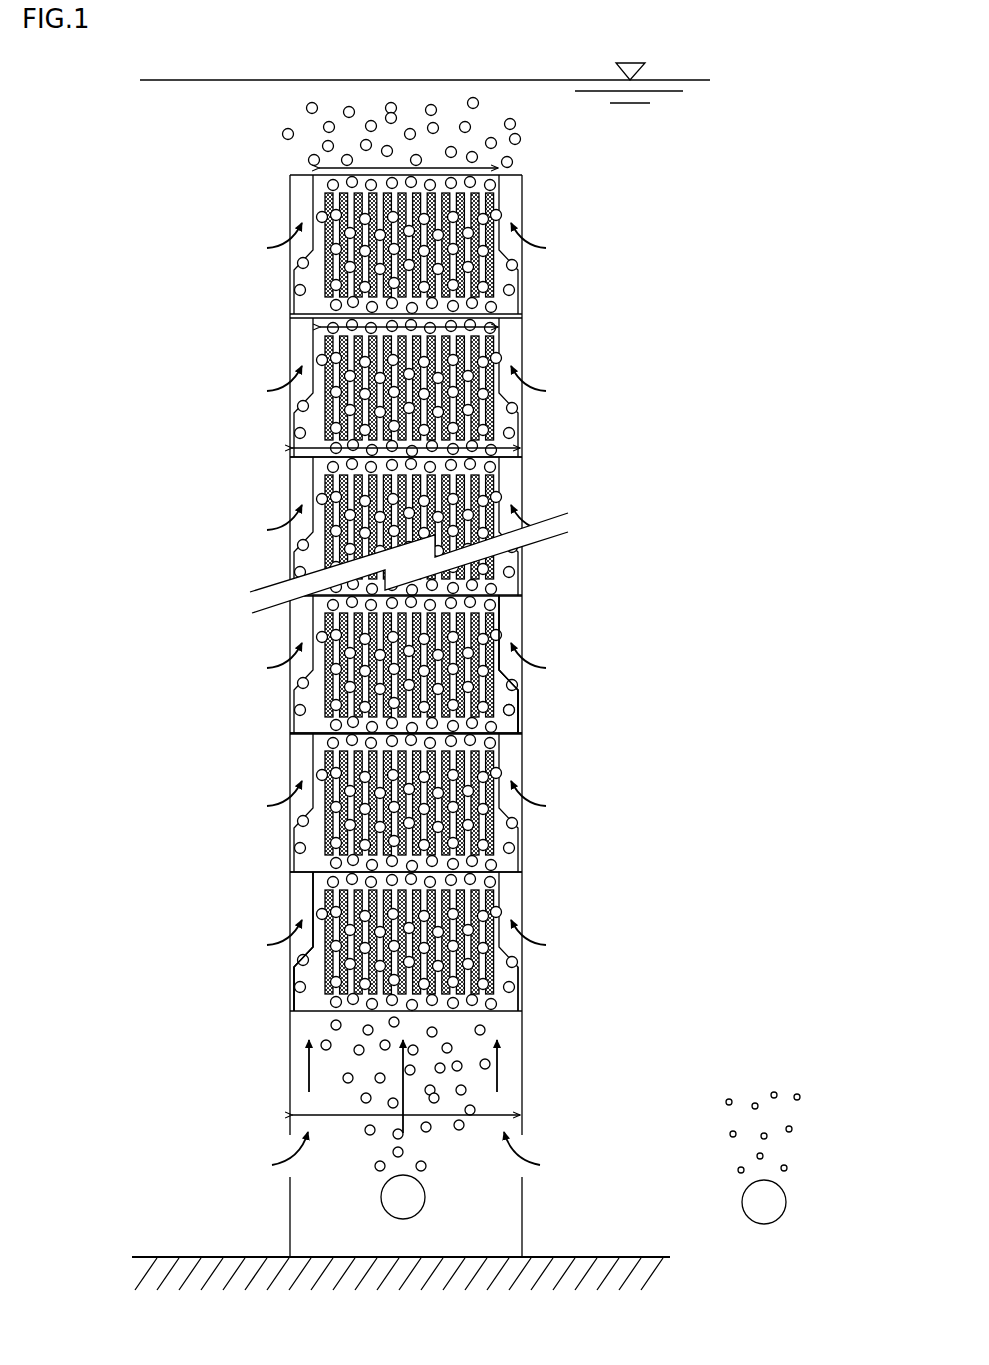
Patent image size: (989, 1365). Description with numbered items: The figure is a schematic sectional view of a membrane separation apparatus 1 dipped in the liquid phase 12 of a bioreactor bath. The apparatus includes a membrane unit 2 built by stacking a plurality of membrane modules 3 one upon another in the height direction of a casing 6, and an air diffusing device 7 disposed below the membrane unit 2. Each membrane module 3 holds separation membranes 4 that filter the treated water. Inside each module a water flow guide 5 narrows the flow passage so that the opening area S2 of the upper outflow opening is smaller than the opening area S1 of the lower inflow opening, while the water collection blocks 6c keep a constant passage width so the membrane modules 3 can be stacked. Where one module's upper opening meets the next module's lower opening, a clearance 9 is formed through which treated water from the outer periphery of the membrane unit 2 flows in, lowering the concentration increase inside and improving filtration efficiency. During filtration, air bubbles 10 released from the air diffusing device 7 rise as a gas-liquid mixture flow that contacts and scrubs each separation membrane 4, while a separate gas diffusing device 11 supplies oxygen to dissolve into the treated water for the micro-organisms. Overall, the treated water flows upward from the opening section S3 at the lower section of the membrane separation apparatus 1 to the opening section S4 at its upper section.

The membrane separation apparatus 1 is at (600, 742).
The membrane unit 2 is at (347, 593).
The membrane module 3 is at (533, 958).
The separation membrane 4 is at (510, 826).
The water flow guide 5 is at (501, 616).
The casing 6 is at (590, 593).
The water collection block 6c is at (523, 645).
The air diffusing device 7 is at (425, 1197).
The clearance 9 is at (512, 735).
The air bubbles 10 is at (515, 709).
The gas diffusing device for supplying oxygen 11 is at (786, 1200).
The liquid phase 12 is at (689, 81).
The opening area of lower opening S1 is at (500, 448).
The opening area of upper opening S2 is at (480, 331).
The lower opening section S3 is at (500, 1112).
The upper opening section S4 is at (485, 165).